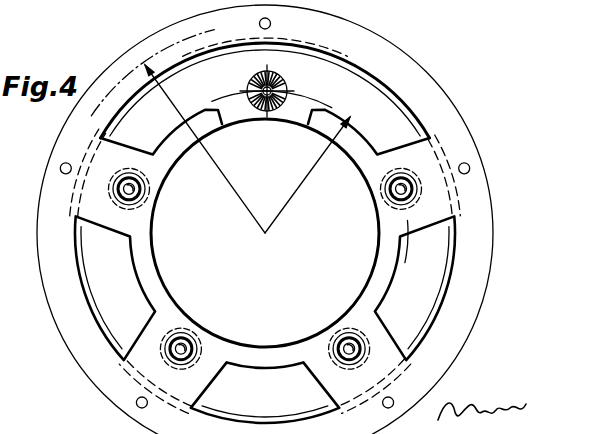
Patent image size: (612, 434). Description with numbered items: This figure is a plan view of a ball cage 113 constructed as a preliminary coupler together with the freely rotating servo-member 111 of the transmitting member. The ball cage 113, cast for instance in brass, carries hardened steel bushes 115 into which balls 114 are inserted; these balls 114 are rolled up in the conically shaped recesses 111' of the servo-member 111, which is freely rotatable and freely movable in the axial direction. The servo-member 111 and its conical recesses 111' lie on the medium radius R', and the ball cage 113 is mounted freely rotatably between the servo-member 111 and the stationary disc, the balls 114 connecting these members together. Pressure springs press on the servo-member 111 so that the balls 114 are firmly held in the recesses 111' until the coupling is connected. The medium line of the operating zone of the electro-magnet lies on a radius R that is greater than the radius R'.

The servo-member 111 is at (299, 98).
The conical recesses of the servo-member 111' is at (267, 113).
The ball cage 113 is at (383, 271).
The balls 114 is at (340, 341).
The hardened steel bushes 115 is at (193, 338).
The radius of the electro-magnet operating zone R is at (205, 149).
The medium radius R' is at (307, 175).